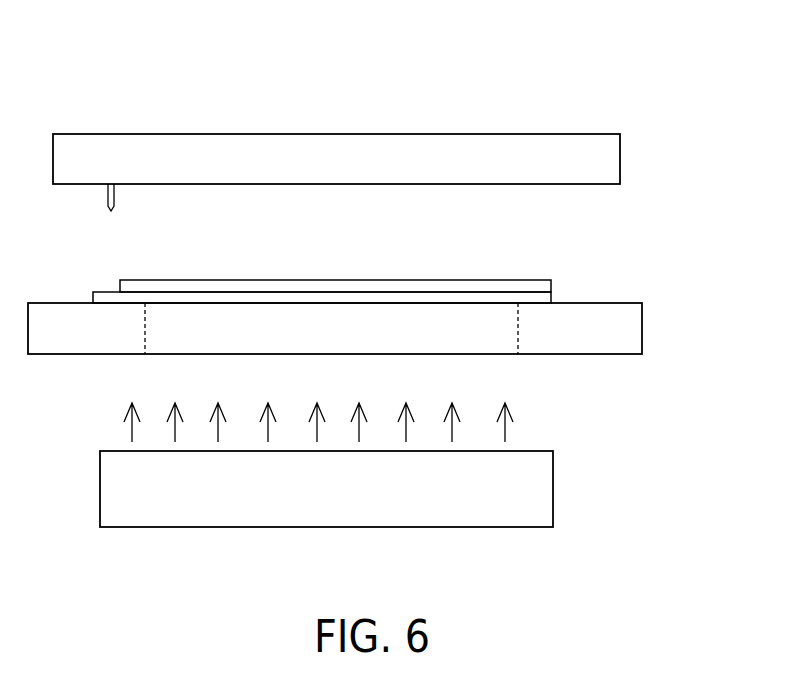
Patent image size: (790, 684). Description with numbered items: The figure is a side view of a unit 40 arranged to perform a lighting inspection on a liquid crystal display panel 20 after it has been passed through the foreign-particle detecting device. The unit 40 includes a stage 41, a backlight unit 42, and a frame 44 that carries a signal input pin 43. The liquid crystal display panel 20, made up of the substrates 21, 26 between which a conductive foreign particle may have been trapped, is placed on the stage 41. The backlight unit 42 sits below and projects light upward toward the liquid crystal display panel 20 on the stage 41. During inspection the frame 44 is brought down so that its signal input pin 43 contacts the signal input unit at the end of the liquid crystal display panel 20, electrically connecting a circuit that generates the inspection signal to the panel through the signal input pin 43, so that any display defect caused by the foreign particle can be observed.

The lighting inspection unit 40 is at (662, 120).
The frame 44 is at (620, 157).
The signal input pin 43 is at (106, 197).
The stage 41 is at (642, 328).
The backlight unit 42 is at (553, 483).
The liquid crystal display panel 20 is at (363, 250).
The substrate 26 is at (553, 281).
The substrate 21 is at (553, 297).